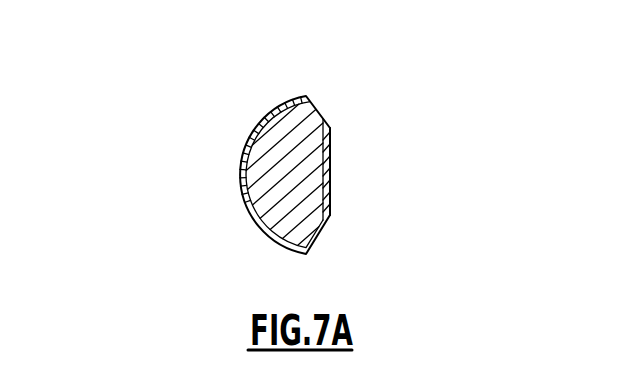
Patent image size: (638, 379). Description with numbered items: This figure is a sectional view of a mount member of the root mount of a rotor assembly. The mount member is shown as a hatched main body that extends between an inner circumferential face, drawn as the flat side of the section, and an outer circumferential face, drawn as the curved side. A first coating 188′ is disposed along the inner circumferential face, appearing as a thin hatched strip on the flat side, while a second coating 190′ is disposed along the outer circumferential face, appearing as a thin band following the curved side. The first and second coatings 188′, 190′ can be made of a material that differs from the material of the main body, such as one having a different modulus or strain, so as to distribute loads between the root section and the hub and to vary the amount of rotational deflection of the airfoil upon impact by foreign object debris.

The second coating 190′ is at (274, 123).
The first coating 188′ is at (367, 159).